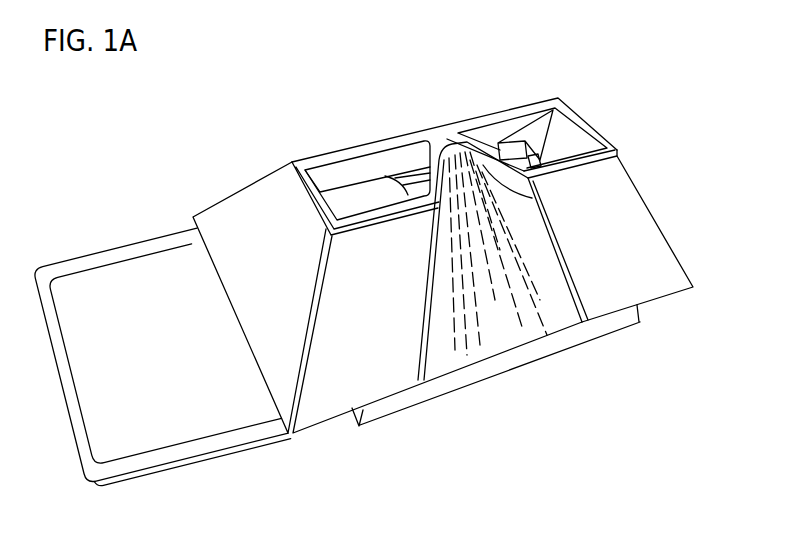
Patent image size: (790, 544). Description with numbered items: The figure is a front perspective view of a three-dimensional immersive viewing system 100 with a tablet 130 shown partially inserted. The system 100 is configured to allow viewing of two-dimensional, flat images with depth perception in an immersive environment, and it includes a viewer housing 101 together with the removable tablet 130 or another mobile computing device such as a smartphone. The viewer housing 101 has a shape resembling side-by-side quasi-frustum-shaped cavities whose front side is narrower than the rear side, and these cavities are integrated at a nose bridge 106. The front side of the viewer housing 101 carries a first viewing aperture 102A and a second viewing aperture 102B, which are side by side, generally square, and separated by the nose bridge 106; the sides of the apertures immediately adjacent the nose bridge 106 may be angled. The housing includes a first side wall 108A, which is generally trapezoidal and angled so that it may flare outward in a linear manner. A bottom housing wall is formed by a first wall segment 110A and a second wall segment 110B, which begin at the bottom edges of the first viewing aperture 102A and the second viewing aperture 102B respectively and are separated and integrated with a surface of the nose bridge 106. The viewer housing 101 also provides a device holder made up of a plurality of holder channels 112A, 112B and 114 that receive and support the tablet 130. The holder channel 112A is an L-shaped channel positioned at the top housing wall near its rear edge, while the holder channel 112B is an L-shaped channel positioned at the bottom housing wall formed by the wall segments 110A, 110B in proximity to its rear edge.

The three-dimensional immersive viewing system 100 is at (217, 88).
The viewer housing 101 is at (222, 159).
The first viewing aperture 102A is at (393, 160).
The second viewing aperture 102B is at (490, 135).
The nose bridge 106 is at (533, 197).
The first side wall 108A is at (292, 274).
The first bottom wall segment 110A is at (397, 312).
The second bottom wall segment 110B is at (632, 250).
The holder channel 112A is at (505, 143).
The holder channel 112B is at (517, 358).
The holder channel 114 is at (537, 160).
The tablet 130 is at (173, 362).